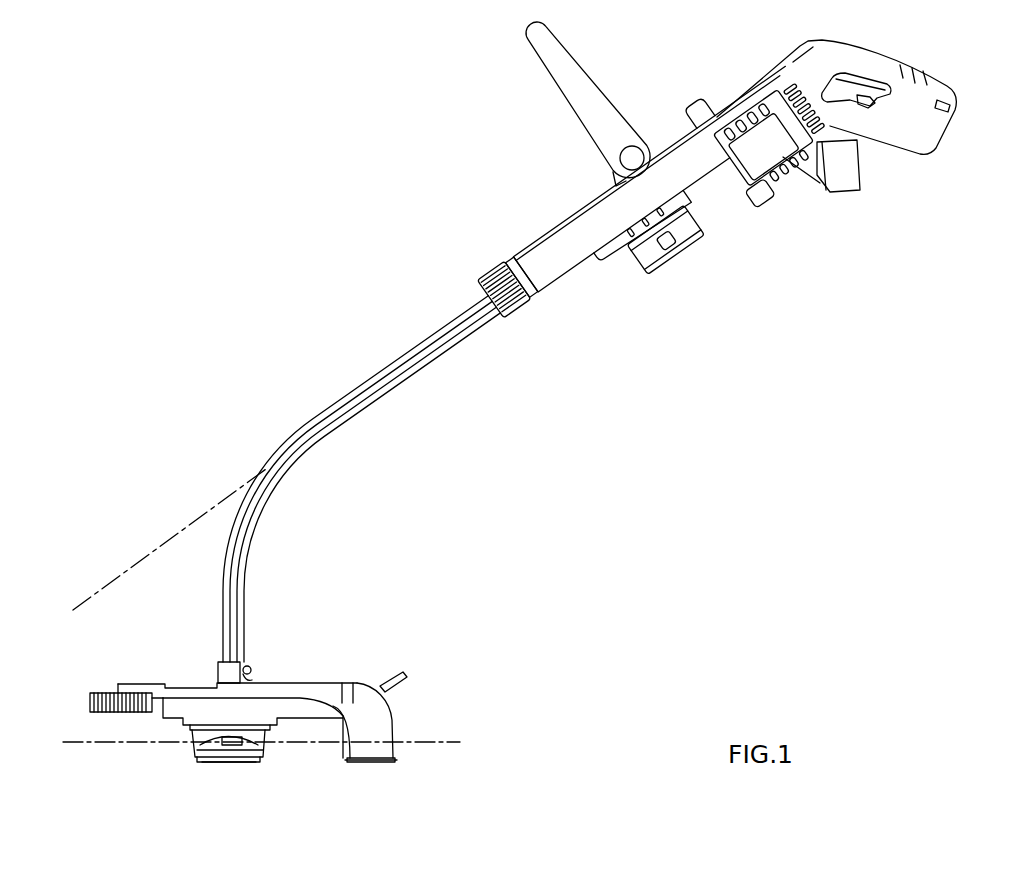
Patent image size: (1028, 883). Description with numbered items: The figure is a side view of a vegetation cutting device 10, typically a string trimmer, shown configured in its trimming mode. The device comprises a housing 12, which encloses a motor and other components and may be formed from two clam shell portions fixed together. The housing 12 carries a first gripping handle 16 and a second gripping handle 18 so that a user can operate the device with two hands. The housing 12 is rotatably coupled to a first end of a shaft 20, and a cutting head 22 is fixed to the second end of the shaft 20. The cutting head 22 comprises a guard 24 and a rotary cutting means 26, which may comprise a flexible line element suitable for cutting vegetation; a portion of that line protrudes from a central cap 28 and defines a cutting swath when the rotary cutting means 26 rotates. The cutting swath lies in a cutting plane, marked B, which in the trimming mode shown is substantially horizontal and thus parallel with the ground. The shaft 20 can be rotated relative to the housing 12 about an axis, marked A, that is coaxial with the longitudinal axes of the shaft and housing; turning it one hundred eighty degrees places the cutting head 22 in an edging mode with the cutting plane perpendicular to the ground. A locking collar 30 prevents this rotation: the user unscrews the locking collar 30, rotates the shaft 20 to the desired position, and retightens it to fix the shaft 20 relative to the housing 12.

The vegetation cutting device 10 is at (366, 128).
The housing 12 is at (557, 283).
The first gripping handle 16 is at (903, 62).
The second gripping handle 18 is at (548, 40).
The shaft 20 is at (372, 378).
The cutting head 22 is at (276, 712).
The guard 24 is at (363, 683).
The rotary cutting means 26 is at (212, 763).
The central cap 28 is at (253, 763).
The locking collar 30 is at (493, 283).